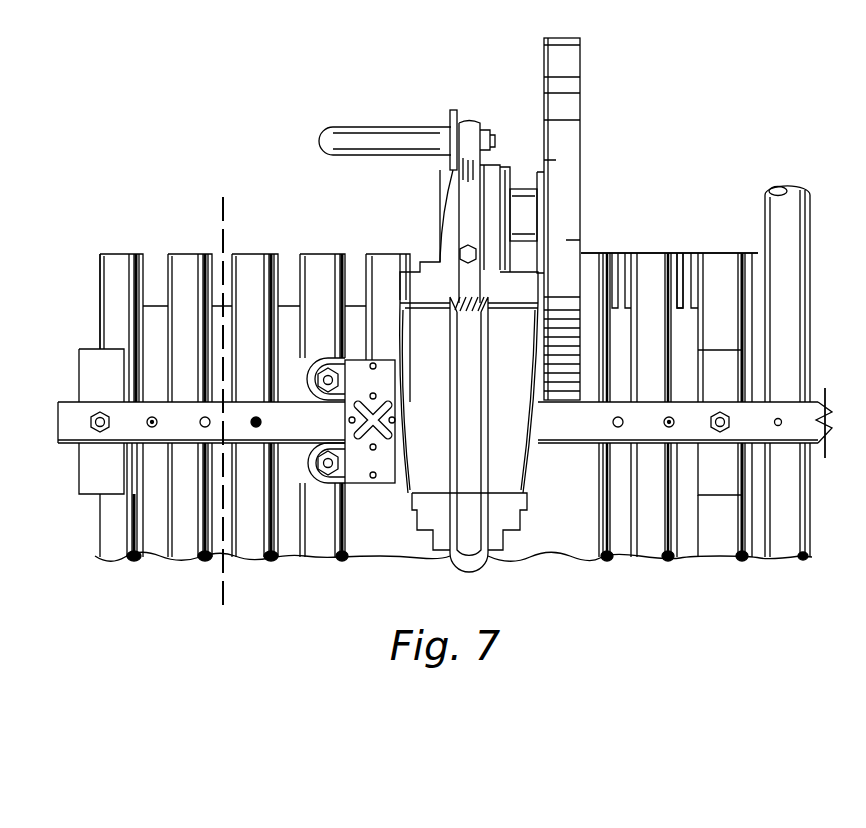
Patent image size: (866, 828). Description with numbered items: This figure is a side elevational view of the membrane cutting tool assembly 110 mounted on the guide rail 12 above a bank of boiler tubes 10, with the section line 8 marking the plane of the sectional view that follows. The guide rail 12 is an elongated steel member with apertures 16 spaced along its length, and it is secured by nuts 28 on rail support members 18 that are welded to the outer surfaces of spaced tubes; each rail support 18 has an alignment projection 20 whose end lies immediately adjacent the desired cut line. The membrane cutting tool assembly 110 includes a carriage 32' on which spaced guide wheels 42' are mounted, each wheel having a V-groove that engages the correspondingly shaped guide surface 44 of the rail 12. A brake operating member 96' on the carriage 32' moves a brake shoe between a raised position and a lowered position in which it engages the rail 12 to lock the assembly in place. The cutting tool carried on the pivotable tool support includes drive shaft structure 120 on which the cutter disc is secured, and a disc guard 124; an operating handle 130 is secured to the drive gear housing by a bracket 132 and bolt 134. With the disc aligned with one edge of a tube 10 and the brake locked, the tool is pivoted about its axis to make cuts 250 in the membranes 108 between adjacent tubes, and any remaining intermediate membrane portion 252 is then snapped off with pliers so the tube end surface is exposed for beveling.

The section line 8- 8 is at (223, 197).
The boiler tubes 10 is at (100, 290).
The guide rail 12 is at (742, 433).
The apertures 16 is at (203, 427).
The rail support members 18 is at (111, 481).
The alignment projection 20 is at (129, 284).
The nuts 28 is at (94, 426).
The carriage 32' is at (370, 482).
The guide wheels 42' is at (322, 411).
The guide surface 44 is at (816, 400).
The brake operating member 96' is at (401, 402).
The membranes 108 is at (687, 543).
The membrane cutting tool assembly 110 is at (514, 112).
The drive shaft structure 120 is at (525, 210).
The disc guard 124 is at (572, 105).
The operating handle 130 is at (406, 133).
The bracket 132 is at (464, 211).
The bolt 134 is at (460, 248).
The cuts 250 is at (697, 258).
The intermediate membrane portion 252 is at (685, 262).